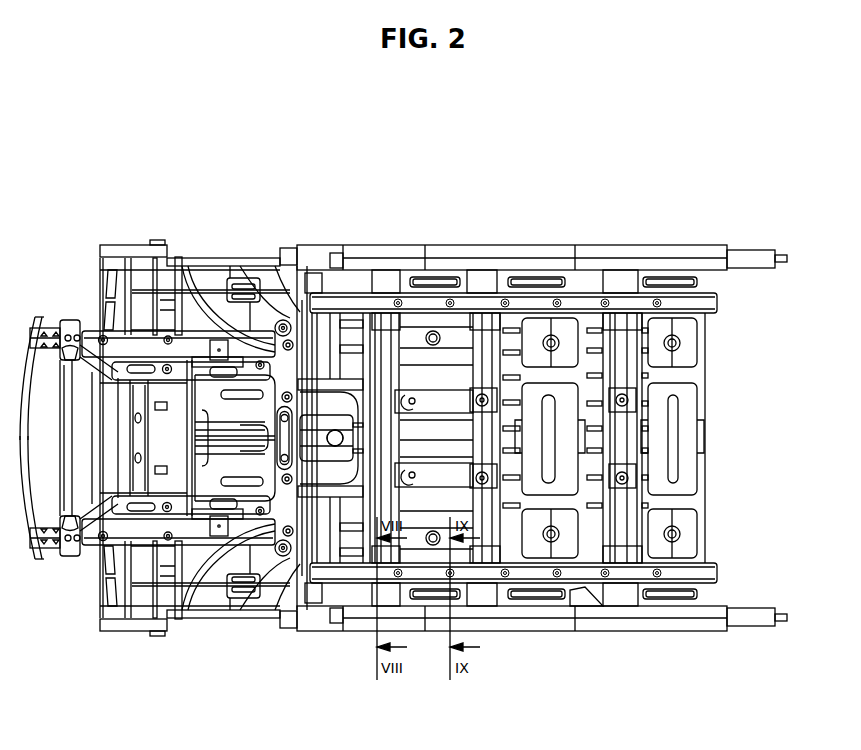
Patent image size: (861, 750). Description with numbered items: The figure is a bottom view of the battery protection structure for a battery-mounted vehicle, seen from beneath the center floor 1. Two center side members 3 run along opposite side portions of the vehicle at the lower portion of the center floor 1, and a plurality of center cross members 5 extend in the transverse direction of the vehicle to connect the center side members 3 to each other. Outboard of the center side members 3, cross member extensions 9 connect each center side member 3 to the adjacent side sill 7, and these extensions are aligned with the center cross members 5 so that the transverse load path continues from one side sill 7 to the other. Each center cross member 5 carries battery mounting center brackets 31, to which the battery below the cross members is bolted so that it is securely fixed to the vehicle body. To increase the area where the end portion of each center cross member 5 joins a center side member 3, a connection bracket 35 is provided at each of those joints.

The center floor 1 is at (698, 430).
The center side member 3 is at (707, 303).
The center cross member 5 is at (362, 325).
The side sill 7 is at (558, 262).
The cross member extension 9 is at (385, 283).
The battery mounting center bracket 31 is at (490, 398).
The connection bracket 35 is at (380, 323).